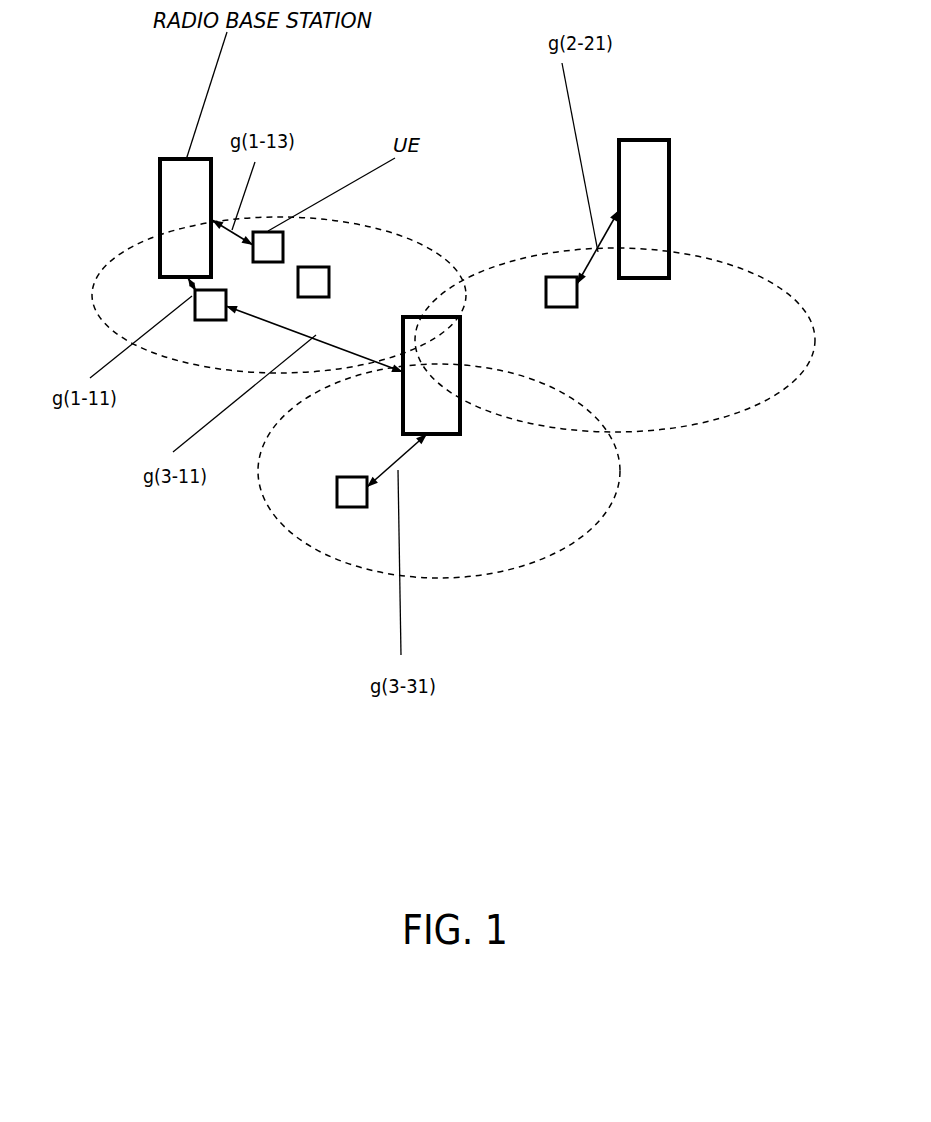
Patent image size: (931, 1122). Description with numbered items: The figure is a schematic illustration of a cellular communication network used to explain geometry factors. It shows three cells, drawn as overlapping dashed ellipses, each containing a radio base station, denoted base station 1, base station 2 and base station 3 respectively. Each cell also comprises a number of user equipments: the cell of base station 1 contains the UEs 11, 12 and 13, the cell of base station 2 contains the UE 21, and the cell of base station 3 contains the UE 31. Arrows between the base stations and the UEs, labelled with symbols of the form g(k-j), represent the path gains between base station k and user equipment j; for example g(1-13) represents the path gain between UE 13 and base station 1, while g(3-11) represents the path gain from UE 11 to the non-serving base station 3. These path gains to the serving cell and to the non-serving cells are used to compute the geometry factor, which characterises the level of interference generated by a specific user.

The base station 1 is at (185, 218).
The base station 2 is at (644, 209).
The base station 3 is at (431, 375).
The user equipment 11 is at (210, 305).
The user equipment 12 is at (313, 282).
The user equipment 13 is at (268, 247).
The user equipment 21 is at (561, 292).
The user equipment 31 is at (352, 492).